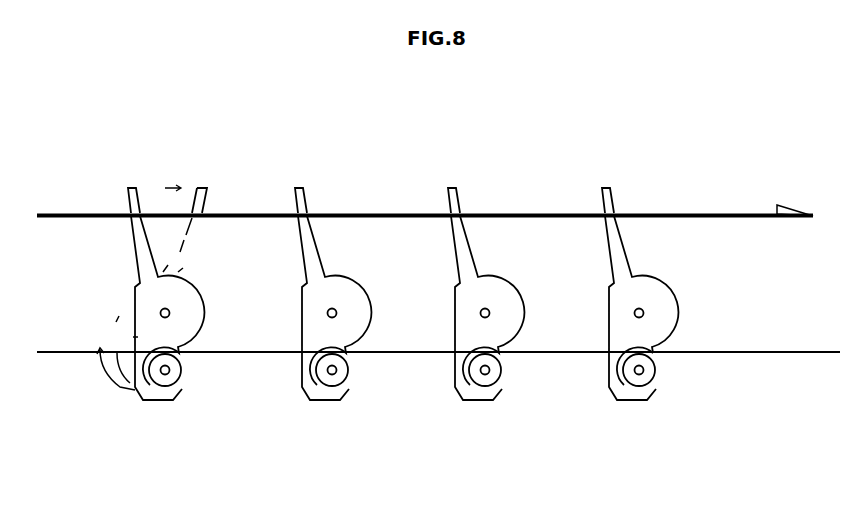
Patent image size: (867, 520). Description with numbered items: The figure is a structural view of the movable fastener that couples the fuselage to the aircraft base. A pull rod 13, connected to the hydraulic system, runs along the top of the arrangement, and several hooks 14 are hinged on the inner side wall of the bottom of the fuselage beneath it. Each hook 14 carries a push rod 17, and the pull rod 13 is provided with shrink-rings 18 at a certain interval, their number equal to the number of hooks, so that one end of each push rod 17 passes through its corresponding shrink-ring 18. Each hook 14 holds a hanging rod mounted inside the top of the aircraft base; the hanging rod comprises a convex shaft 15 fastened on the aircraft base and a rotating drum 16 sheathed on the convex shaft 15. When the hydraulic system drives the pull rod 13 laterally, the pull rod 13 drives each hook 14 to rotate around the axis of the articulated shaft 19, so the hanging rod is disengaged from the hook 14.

The pull rod 13 is at (508, 213).
The hook 14 is at (462, 383).
The convex shaft 15 is at (638, 370).
The rotating drum 16 is at (650, 382).
The push rod 17 is at (304, 199).
The shrink-ring 18 is at (615, 213).
The axis of articulated shaft 19 is at (328, 318).